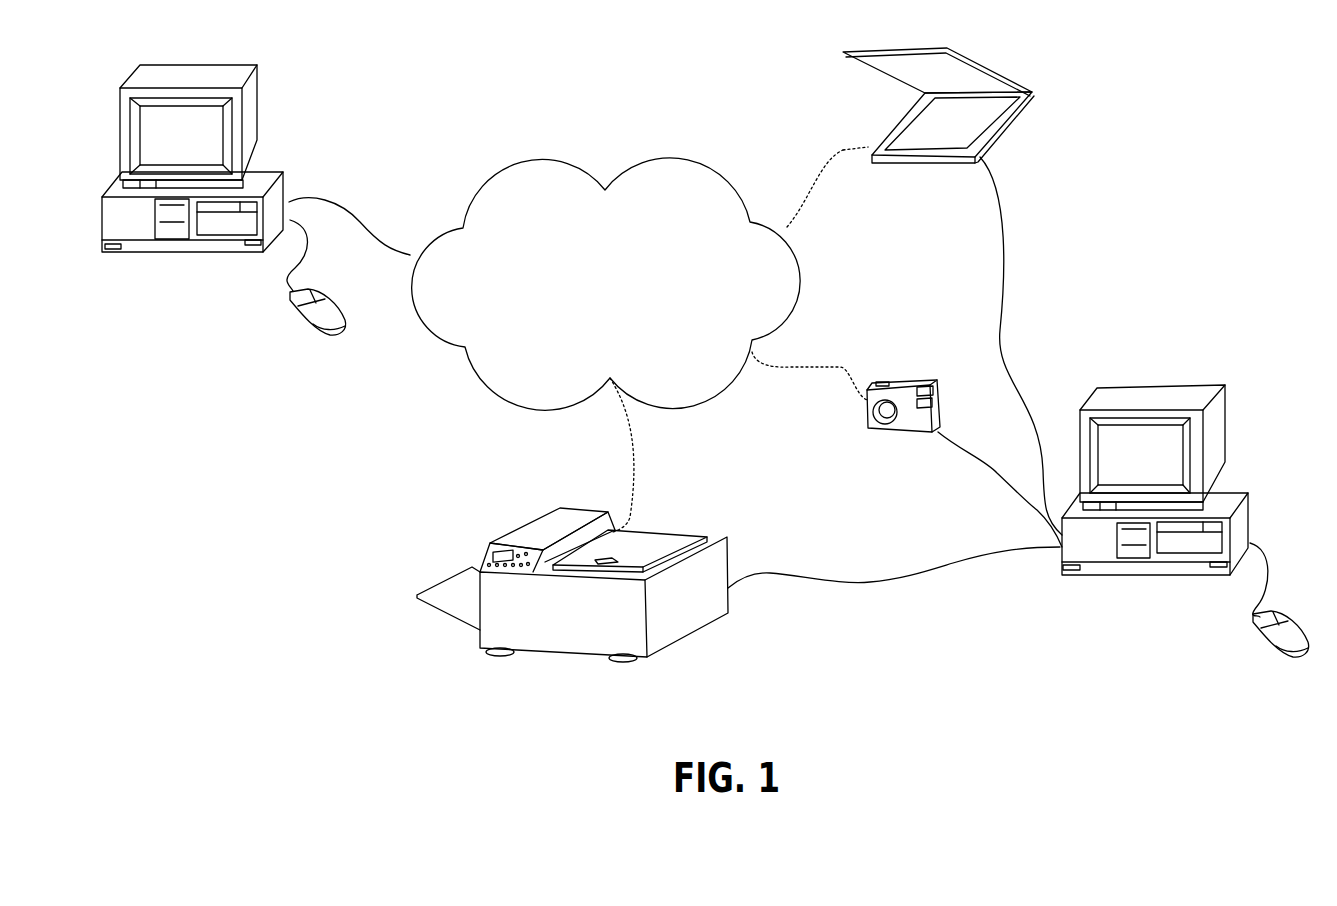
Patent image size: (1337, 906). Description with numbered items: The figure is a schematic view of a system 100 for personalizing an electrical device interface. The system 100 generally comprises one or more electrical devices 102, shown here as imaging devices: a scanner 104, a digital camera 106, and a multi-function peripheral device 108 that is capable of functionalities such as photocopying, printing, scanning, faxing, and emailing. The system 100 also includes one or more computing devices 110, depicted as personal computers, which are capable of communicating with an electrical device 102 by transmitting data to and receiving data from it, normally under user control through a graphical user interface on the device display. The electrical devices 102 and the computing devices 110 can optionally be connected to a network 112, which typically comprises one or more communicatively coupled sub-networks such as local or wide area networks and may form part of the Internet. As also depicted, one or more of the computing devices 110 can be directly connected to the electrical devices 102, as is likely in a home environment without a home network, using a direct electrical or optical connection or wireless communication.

The system 100 is at (187, 573).
The electrical devices 102 is at (765, 365).
The scanner 104 is at (878, 163).
The digital camera 106 is at (937, 408).
The multi-function peripheral (MFP) device 108 is at (693, 622).
The computing devices 110 is at (150, 283).
The network 112 is at (624, 305).